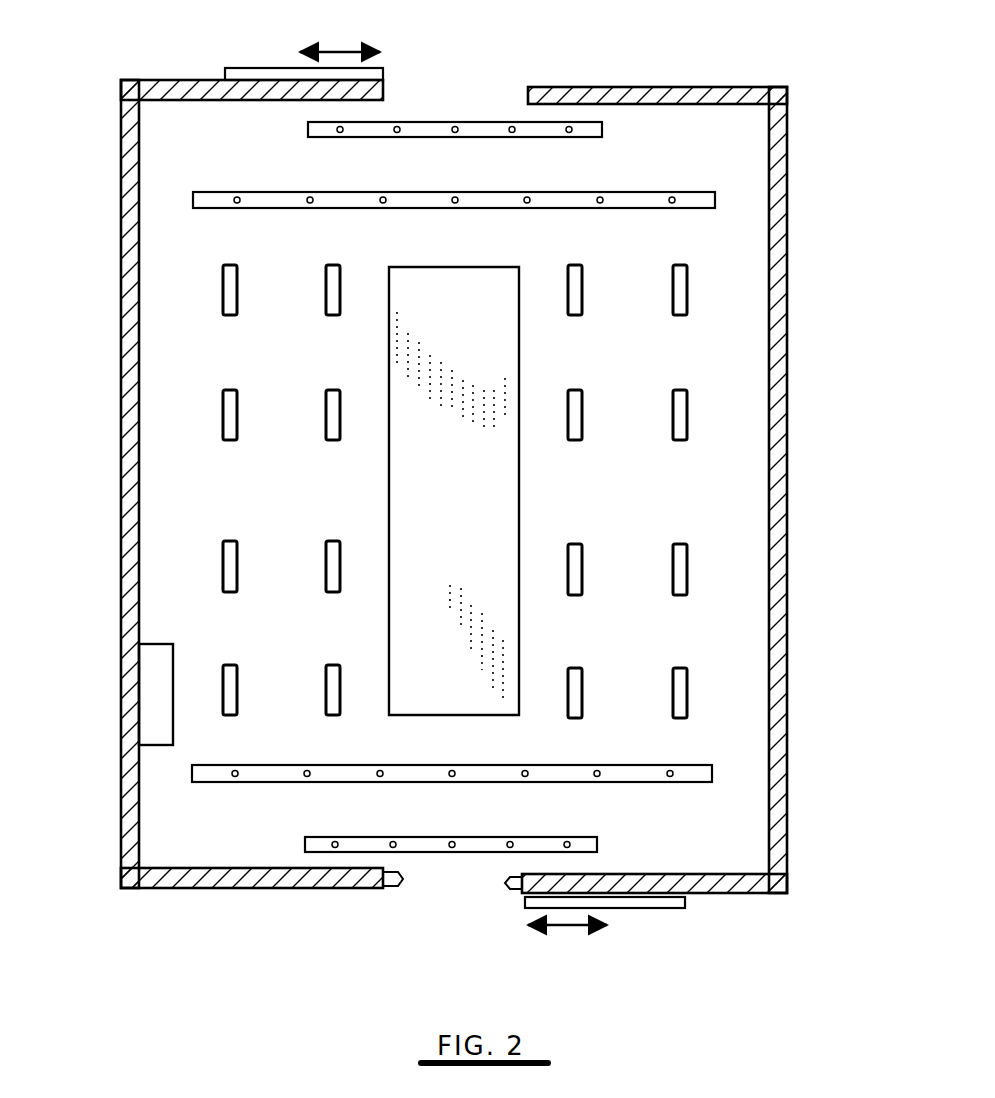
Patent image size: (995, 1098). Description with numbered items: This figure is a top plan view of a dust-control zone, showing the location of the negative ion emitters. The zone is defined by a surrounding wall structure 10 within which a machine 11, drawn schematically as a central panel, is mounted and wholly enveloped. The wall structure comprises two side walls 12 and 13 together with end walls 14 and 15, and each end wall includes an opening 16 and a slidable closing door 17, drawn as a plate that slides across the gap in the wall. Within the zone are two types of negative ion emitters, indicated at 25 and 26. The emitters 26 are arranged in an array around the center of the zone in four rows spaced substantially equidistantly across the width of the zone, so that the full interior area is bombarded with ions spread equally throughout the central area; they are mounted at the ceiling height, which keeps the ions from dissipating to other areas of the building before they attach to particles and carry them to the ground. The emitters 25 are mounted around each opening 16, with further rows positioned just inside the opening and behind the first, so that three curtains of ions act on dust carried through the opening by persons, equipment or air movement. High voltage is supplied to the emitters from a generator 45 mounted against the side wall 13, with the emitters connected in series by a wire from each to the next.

The surrounding wall structure 10 is at (463, 495).
The machine 11 is at (415, 468).
The side wall 12 is at (789, 503).
The side wall 13 is at (120, 452).
The end wall 14 is at (636, 87).
The end wall 15 is at (264, 894).
The opening 16 is at (528, 97).
The slidable closing door 17 is at (252, 67).
The emitter 25 is at (257, 784).
The emitter 26 is at (683, 666).
The generator 45 is at (160, 677).